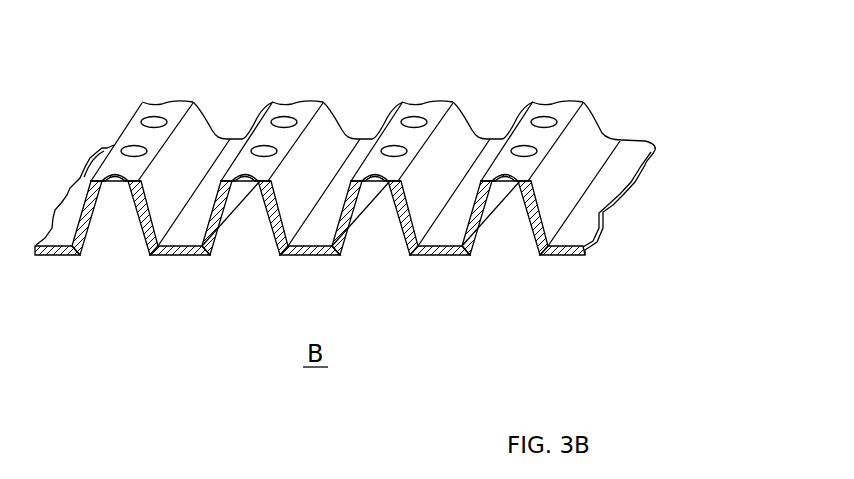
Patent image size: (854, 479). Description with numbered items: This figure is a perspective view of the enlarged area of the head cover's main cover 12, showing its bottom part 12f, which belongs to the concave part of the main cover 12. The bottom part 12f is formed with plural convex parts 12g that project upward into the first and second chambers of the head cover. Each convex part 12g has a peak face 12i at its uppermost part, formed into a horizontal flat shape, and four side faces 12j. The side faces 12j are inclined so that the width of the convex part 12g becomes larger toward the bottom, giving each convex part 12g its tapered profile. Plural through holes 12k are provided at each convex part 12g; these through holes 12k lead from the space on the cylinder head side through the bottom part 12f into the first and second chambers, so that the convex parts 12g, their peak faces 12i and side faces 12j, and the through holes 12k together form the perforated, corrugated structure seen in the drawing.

The main cover 12 is at (371, 189).
The bottom part 12f is at (446, 291).
The convex part 12g is at (590, 133).
The peak face 12i is at (527, 138).
The side face 12j is at (570, 175).
The through hole 12k is at (547, 117).